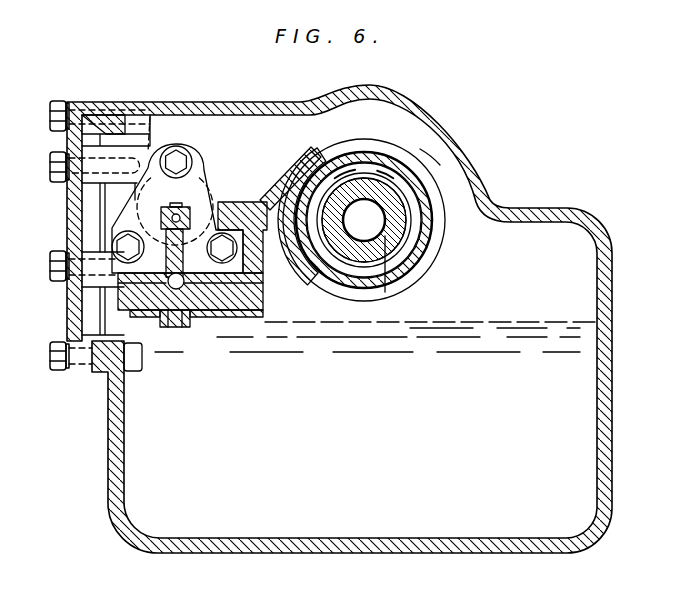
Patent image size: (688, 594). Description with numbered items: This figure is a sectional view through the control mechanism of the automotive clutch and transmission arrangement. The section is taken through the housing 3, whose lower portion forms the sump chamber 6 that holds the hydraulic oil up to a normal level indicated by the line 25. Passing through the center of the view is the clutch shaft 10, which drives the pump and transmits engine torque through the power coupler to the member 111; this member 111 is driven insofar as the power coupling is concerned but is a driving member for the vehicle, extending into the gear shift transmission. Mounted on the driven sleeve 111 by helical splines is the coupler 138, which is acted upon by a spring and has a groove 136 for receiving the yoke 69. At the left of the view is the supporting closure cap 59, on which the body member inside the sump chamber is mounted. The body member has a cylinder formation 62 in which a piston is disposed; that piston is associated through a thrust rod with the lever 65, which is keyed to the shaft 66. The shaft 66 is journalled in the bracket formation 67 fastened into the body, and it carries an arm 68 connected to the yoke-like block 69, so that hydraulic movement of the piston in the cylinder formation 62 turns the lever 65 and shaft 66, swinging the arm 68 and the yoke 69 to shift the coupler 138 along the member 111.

The housing 3 is at (613, 300).
The sump chamber 6 is at (399, 434).
The clutch shaft 10 is at (386, 236).
The oil level line 25 is at (458, 320).
The supporting closure cap 59 is at (67, 220).
The cylinder formation 62 is at (153, 98).
The lever 65 is at (208, 191).
The shaft 66 is at (196, 318).
The bracket formation 67 is at (121, 243).
The arm 68 is at (262, 264).
The yoke-like block 69 is at (293, 170).
The driven member 111 is at (390, 292).
The groove 136 is at (440, 196).
The coupler 138 is at (426, 167).